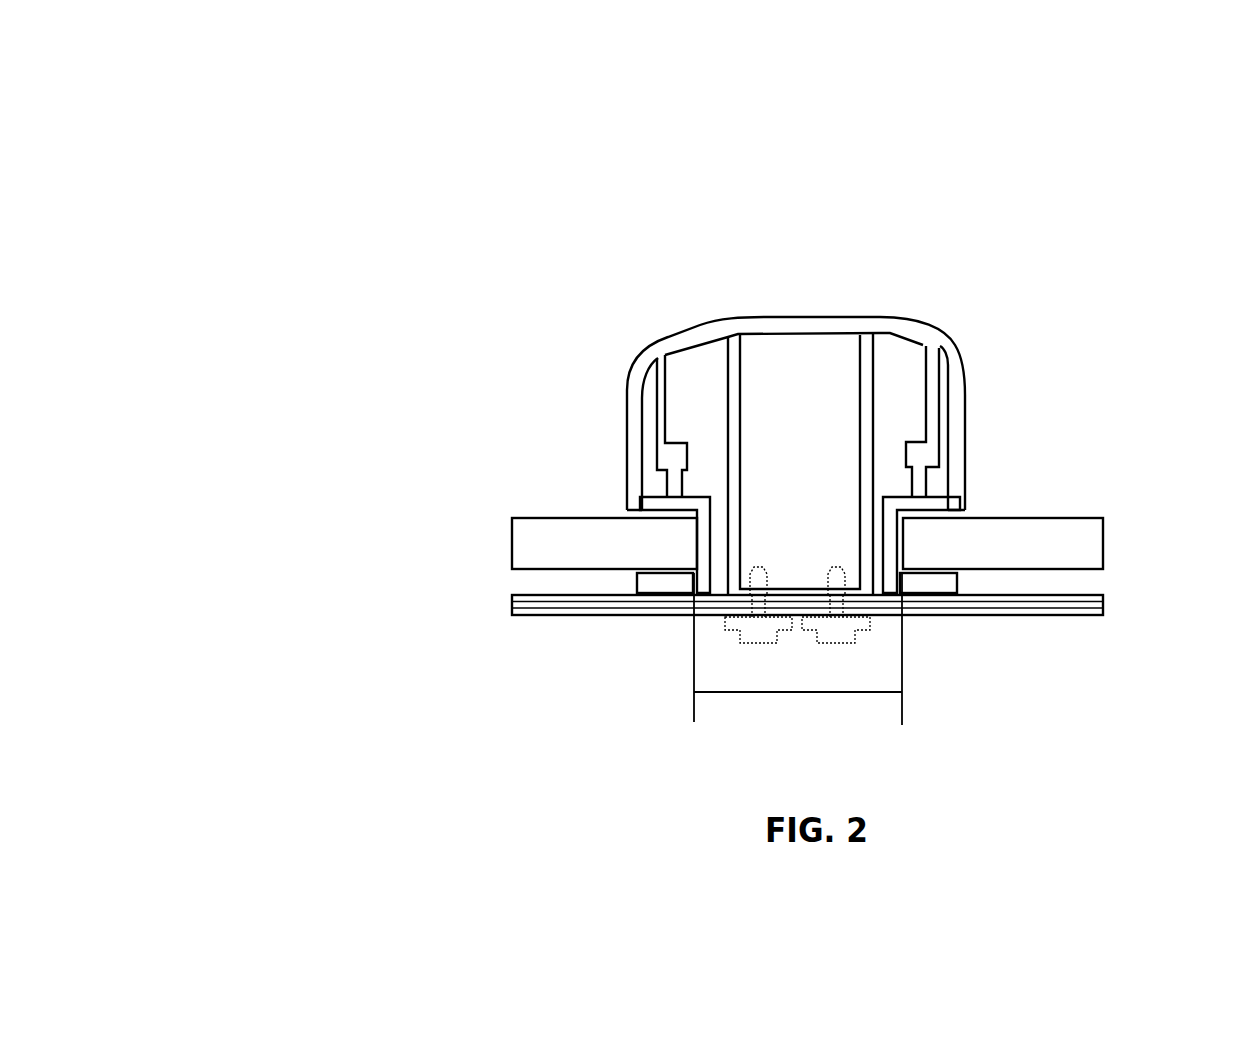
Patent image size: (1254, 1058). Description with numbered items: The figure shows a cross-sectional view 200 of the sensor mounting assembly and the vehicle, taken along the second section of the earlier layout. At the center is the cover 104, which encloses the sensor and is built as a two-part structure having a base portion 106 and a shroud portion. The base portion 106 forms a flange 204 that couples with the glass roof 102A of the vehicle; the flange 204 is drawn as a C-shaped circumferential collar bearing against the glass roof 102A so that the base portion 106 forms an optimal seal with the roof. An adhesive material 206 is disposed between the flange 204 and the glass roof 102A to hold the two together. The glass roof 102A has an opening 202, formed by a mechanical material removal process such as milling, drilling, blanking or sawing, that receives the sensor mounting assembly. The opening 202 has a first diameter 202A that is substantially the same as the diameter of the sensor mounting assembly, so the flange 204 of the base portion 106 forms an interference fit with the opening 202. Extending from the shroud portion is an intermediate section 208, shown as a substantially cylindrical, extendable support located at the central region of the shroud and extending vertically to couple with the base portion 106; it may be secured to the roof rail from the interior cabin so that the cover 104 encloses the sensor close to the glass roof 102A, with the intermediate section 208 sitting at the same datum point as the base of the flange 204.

The cross-sectional view 200 is at (175, 178).
The cover 104 is at (810, 283).
The base portion 106 is at (658, 492).
The intermediate section 208 is at (870, 398).
The adhesive material 206 is at (673, 510).
The glass roof 102A is at (558, 540).
The flange 204 is at (663, 588).
The opening 202 is at (878, 568).
The first diameter 202A is at (832, 693).